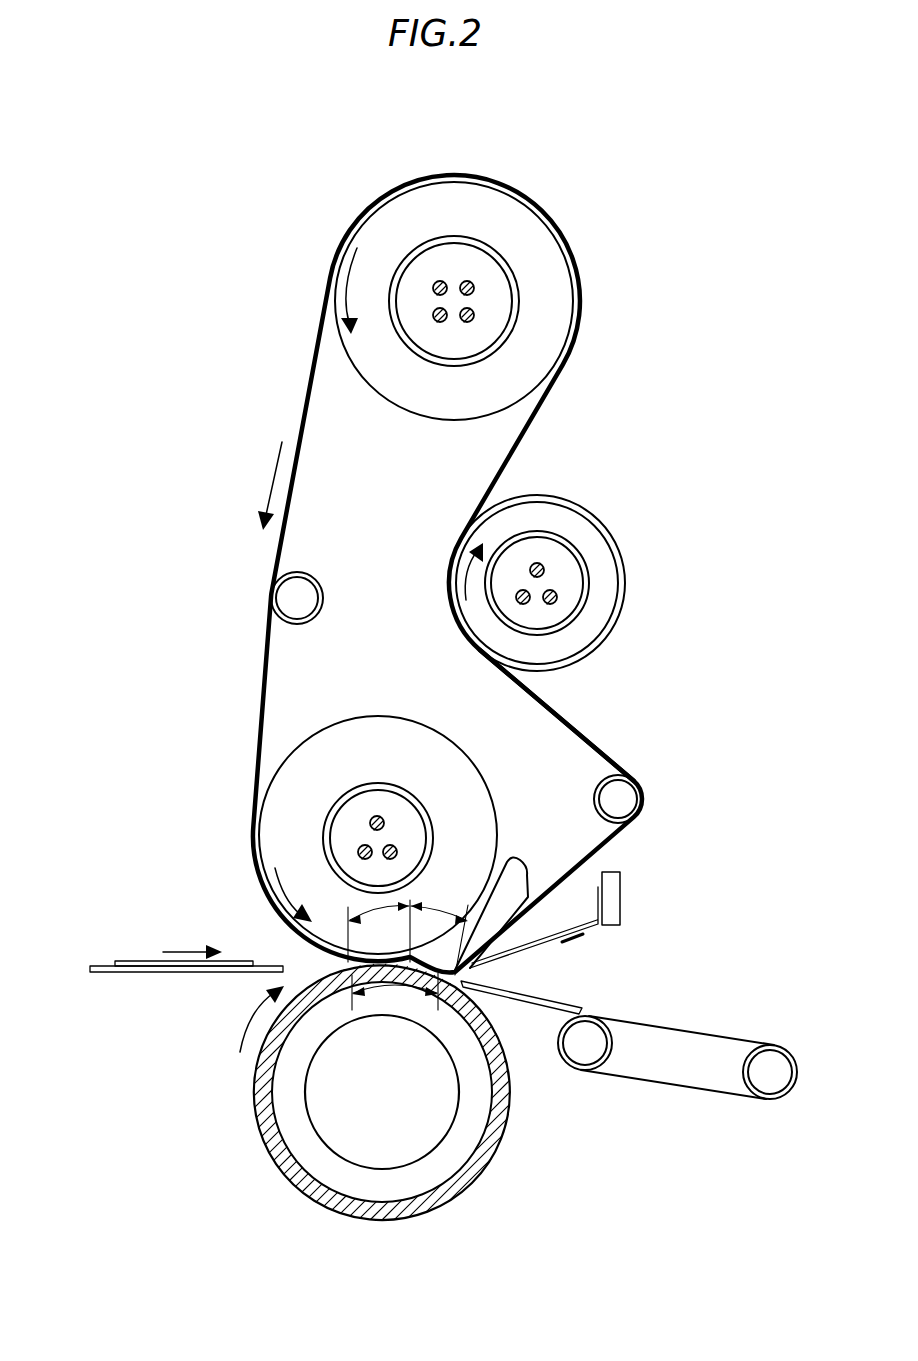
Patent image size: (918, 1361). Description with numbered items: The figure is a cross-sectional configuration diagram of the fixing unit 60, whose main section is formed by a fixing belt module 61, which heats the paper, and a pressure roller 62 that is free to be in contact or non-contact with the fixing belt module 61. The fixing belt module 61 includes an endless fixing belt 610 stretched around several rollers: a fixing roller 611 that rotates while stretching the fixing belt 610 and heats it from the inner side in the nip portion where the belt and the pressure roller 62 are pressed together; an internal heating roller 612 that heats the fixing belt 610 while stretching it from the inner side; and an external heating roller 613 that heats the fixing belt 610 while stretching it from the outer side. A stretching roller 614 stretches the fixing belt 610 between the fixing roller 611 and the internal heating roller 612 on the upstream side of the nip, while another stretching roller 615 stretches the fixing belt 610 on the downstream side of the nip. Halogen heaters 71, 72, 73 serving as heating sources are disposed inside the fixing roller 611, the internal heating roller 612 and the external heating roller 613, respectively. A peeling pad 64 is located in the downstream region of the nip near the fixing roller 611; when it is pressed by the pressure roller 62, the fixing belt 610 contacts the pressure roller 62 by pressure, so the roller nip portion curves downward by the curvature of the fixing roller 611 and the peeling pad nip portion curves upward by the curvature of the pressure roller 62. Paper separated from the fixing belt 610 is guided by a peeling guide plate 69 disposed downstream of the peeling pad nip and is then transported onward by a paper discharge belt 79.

The fixing unit 60 is at (612, 166).
The fixing belt module 61 is at (298, 360).
The fixing belt 610 is at (593, 740).
The fixing roller 611 is at (384, 710).
The internal heating roller 612 is at (398, 424).
The external heating roller 613 is at (549, 496).
The stretching roller 614 is at (322, 580).
The stretching roller 615 is at (594, 793).
The halogen heater 71 is at (379, 816).
The halogen heater 72 is at (468, 282).
The halogen heater 73 is at (555, 588).
The pressure roller 62 is at (314, 1210).
The peeling pad 64 is at (518, 861).
The peeling guide plate 69 is at (563, 940).
The paper discharge belt 79 is at (664, 1087).